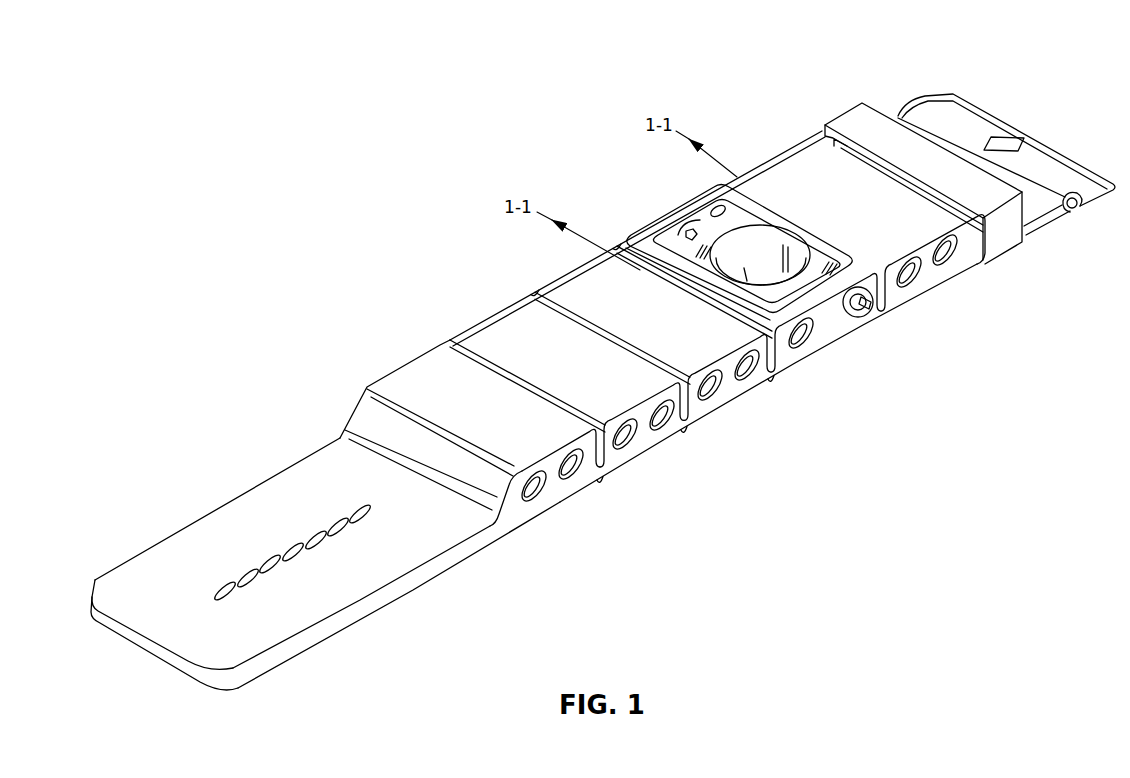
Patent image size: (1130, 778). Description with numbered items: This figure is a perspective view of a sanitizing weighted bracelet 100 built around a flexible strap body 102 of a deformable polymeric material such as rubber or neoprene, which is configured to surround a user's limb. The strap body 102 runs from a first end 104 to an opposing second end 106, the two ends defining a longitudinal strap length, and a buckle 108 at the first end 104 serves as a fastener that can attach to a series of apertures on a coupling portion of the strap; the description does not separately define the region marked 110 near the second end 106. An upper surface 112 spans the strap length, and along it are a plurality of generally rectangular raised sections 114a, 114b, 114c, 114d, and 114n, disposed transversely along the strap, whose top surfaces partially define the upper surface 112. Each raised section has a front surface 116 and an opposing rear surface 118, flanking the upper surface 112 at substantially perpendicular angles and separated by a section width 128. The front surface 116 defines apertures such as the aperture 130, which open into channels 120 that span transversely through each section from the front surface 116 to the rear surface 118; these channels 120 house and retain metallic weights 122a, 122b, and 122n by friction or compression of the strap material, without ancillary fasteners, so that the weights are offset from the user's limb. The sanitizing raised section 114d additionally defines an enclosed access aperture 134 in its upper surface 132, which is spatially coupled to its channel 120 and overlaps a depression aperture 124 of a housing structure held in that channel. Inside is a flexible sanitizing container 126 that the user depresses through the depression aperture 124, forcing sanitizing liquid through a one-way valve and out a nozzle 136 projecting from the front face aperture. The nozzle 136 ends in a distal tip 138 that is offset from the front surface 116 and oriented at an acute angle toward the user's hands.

The sanitizing weighted bracelet 100 is at (290, 288).
The strap body 102 is at (323, 467).
The first end 104 is at (921, 99).
The second end 106 is at (95, 579).
The buckle 108 is at (1024, 140).
The strap portion with adjustment slots 110 is at (230, 535).
The upper surface 112 is at (408, 388).
The generally rectangular raised section 114a is at (537, 443).
The generally rectangular raised section 114b is at (632, 387).
The generally rectangular raised section 114c is at (718, 338).
The sanitizing raised section 114d is at (790, 310).
The generally rectangular raised section 114n is at (920, 227).
The front surface 116 is at (795, 363).
The rear surface 118 is at (660, 210).
The channel 120 is at (571, 459).
The weight 122a is at (538, 498).
The weight 122b is at (574, 472).
The weight 122n is at (950, 248).
The depression aperture 124 is at (738, 247).
The flexible sanitizing container 126 is at (797, 270).
The section width 128 is at (616, 408).
The aperture 130 is at (525, 489).
The upper surface of the sanitizing raised section 132 is at (647, 239).
The access aperture 134 is at (784, 281).
The nozzle 136 is at (867, 303).
The distal tip 138 is at (868, 314).